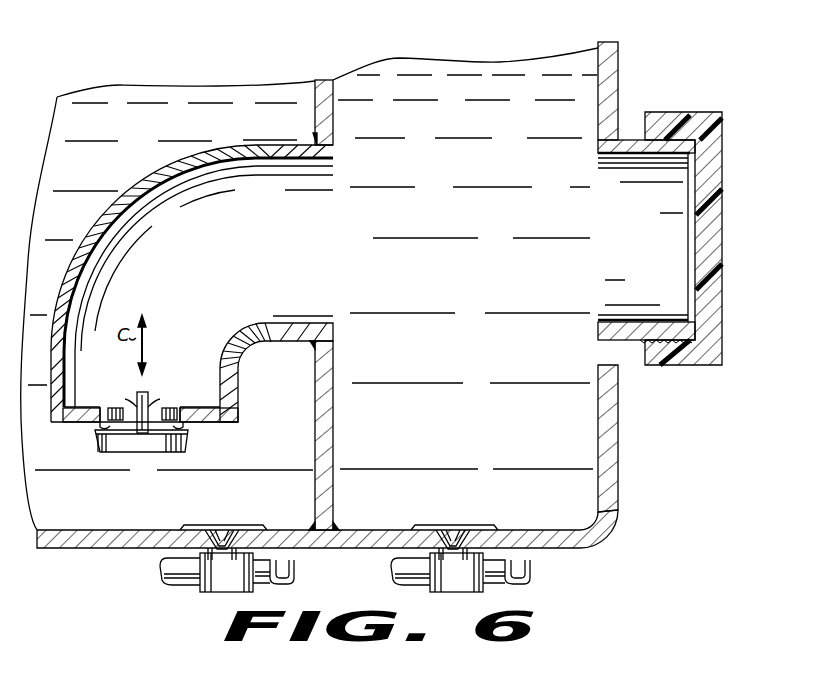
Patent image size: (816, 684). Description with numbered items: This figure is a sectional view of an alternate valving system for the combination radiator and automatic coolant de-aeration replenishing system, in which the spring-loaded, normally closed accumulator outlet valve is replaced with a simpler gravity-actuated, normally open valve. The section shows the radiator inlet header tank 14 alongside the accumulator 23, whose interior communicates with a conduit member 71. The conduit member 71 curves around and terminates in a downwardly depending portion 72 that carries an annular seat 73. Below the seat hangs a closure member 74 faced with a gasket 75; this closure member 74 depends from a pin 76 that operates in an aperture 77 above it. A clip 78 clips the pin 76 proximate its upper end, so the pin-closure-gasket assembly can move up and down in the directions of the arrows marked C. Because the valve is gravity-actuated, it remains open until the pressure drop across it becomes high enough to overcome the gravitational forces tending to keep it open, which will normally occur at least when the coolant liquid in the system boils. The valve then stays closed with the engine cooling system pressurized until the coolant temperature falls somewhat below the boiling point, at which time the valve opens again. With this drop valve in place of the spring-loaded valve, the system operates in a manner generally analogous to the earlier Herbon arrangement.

The radiator inlet header tank 14 is at (128, 525).
The accumulator 23 is at (590, 438).
The conduit member 71 is at (148, 197).
The downwardly depending portion 72 is at (243, 379).
The annular seat 73 is at (102, 428).
The closure member 74 is at (130, 453).
The gasket 75 is at (185, 438).
The pin 76 is at (148, 391).
The aperture 77 is at (130, 403).
The clip 78 is at (158, 403).